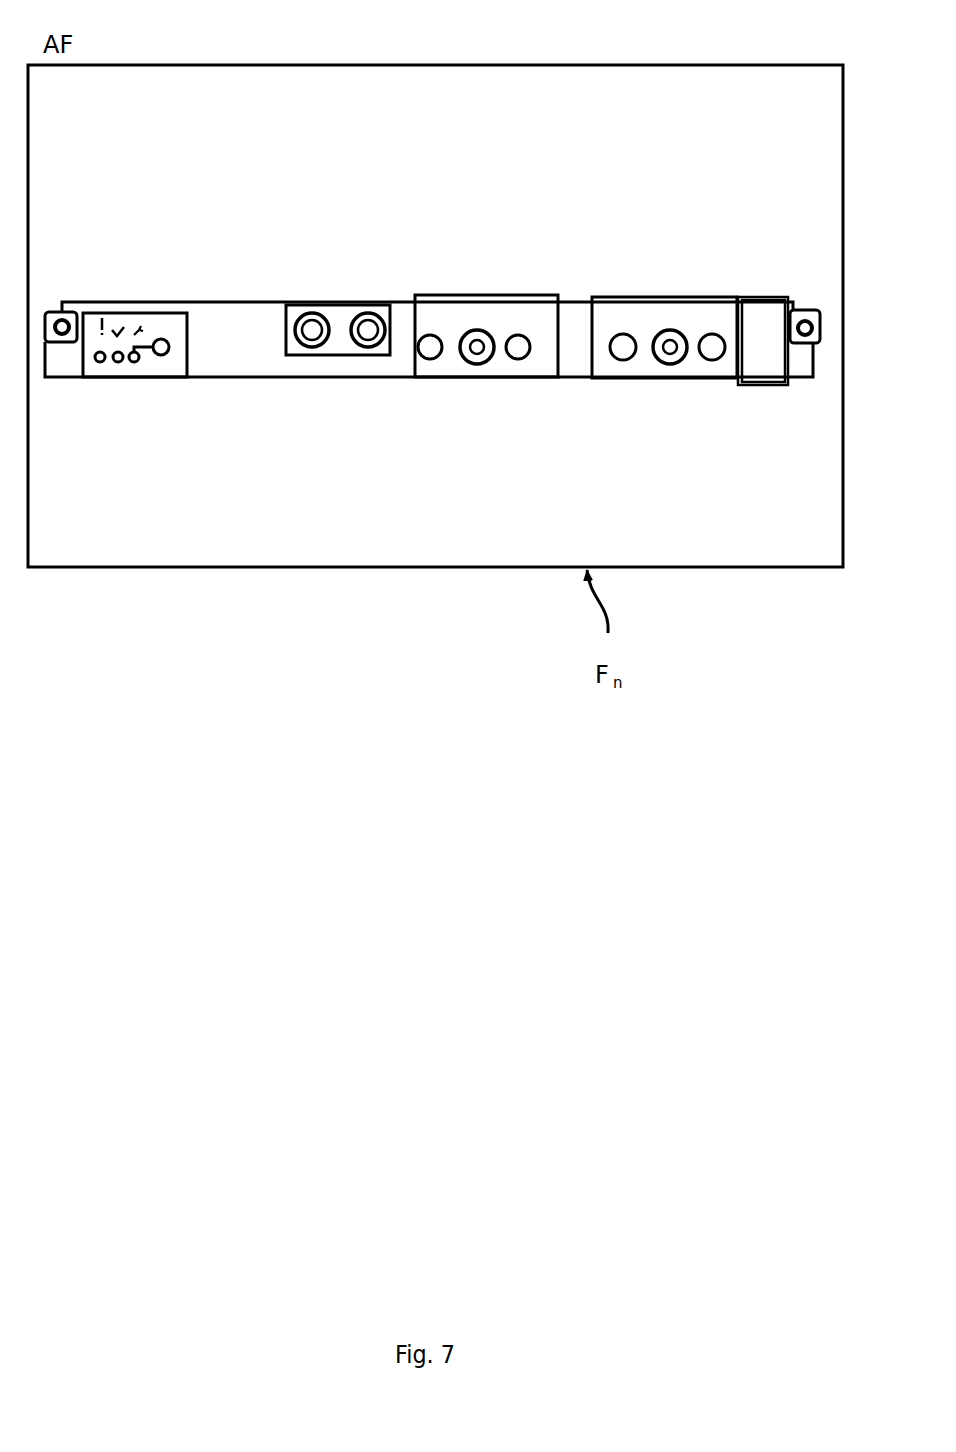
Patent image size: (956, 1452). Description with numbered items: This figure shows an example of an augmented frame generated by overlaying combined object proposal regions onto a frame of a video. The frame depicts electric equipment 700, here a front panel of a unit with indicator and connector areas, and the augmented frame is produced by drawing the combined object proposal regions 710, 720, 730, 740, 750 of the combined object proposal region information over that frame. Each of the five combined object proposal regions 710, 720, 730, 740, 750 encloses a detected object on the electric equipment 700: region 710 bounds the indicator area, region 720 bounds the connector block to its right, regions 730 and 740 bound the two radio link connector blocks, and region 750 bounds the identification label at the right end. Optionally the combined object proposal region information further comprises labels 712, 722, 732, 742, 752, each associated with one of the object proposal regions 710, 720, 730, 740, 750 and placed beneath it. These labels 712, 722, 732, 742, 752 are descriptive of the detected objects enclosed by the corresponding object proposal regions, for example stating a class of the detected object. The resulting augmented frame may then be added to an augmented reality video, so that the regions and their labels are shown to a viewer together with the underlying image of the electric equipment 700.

The electric equipment 700 is at (267, 182).
The combined object proposal region 710 is at (162, 308).
The label 712 is at (135, 413).
The combined object proposal region 720 is at (338, 307).
The label 722 is at (322, 425).
The combined object proposal region 730 is at (505, 297).
The label 732 is at (502, 415).
The combined object proposal region 740 is at (662, 297).
The label 742 is at (637, 425).
The combined object proposal region 750 is at (762, 297).
The label 752 is at (735, 420).